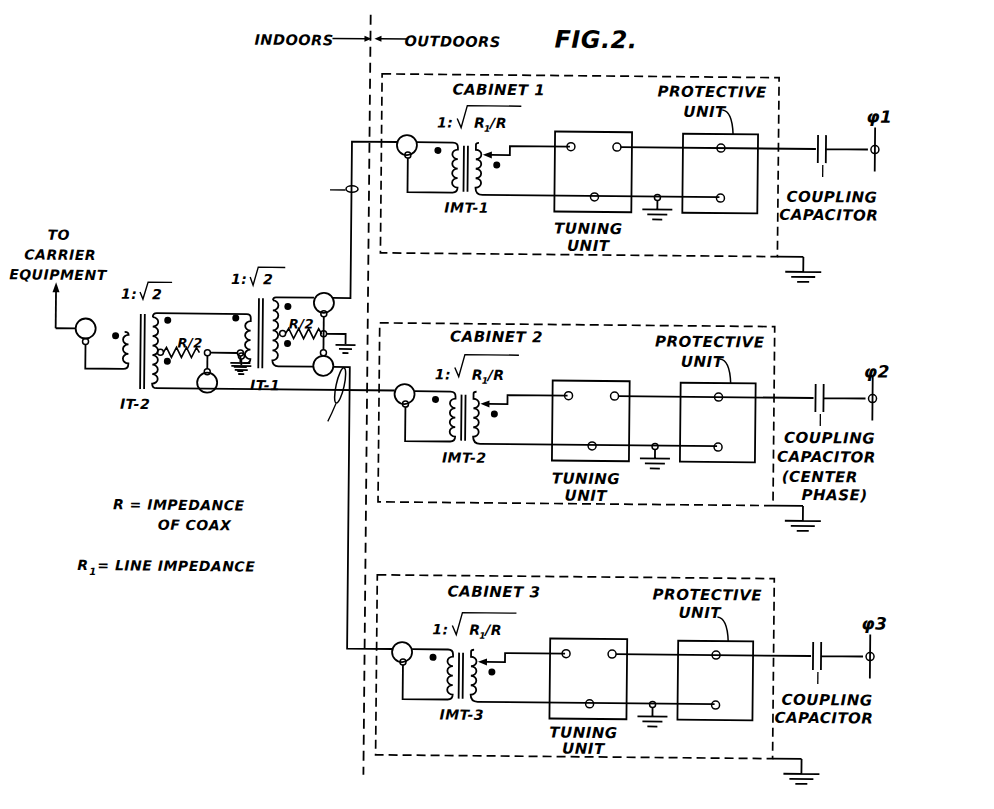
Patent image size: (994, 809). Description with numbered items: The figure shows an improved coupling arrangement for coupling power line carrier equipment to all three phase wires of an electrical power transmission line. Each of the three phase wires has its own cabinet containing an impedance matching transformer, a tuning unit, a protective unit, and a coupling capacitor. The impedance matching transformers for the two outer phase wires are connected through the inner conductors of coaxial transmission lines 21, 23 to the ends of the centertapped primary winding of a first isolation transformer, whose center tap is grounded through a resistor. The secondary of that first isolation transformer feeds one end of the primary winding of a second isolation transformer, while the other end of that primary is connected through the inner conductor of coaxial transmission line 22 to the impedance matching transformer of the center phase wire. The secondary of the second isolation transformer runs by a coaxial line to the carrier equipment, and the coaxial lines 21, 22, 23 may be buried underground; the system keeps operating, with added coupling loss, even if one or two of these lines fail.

The coaxial transmission line 21 is at (349, 228).
The coaxial transmission line 22 is at (229, 393).
The coaxial transmission line 23 is at (350, 590).